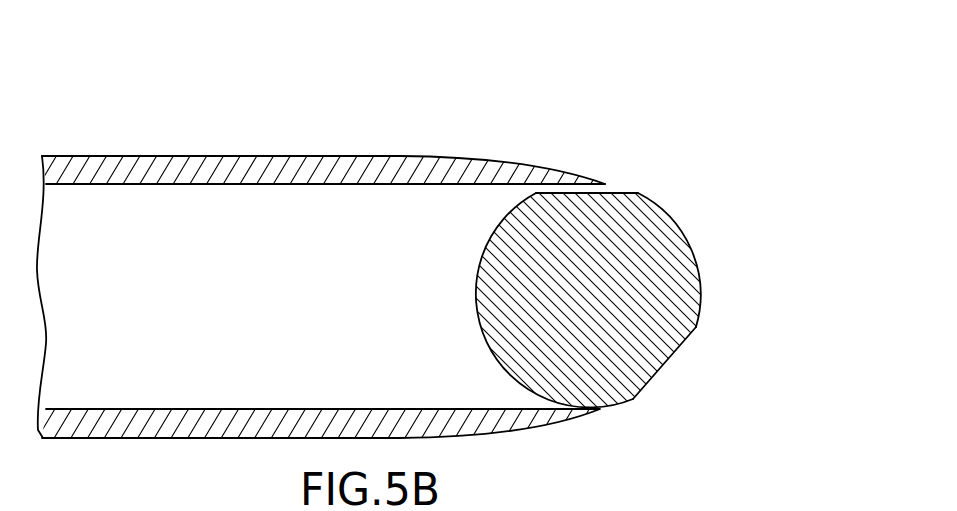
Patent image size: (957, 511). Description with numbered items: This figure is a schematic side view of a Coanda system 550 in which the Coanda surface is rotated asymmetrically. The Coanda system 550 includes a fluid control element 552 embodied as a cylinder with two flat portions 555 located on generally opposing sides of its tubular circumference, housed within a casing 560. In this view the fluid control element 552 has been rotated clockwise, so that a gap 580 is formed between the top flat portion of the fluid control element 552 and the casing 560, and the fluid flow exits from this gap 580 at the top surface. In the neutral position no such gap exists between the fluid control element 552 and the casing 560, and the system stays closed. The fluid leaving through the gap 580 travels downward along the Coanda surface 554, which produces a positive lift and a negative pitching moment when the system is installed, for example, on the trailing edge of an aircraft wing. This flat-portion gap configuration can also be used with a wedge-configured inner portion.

The Coanda system 550 is at (478, 248).
The casing 560 is at (355, 155).
The gap 580 is at (609, 185).
The fluid control element 552 is at (503, 308).
The Coanda surface 554 is at (698, 273).
The flat portions 555 is at (623, 192).